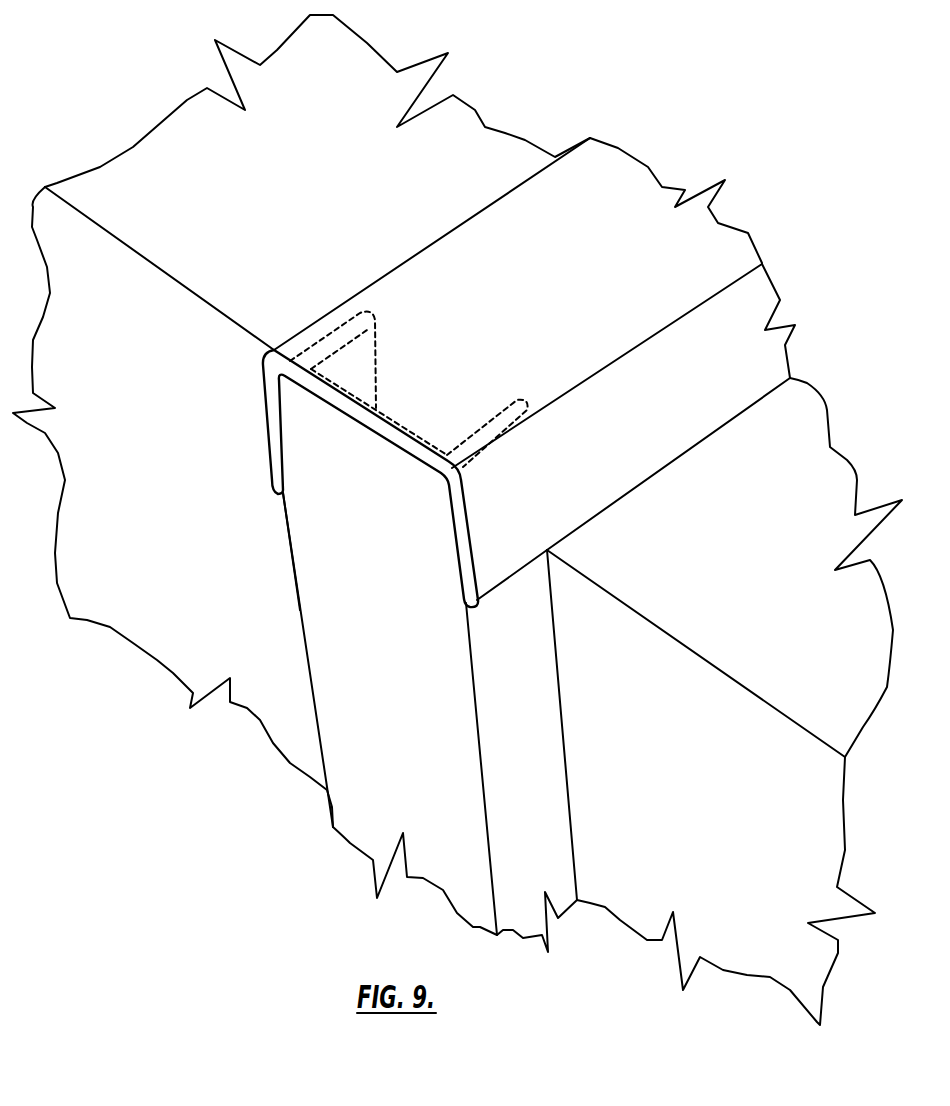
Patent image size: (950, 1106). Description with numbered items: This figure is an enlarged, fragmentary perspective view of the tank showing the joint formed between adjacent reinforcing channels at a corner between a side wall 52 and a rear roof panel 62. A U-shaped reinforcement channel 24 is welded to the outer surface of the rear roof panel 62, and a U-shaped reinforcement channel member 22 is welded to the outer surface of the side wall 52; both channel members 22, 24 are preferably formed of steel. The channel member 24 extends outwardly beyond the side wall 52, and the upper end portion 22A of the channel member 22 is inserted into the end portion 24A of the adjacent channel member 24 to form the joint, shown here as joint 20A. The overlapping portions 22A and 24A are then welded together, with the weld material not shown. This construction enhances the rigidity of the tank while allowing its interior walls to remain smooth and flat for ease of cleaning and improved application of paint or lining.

The edge channel clip 20A is at (252, 433).
The channel member 22 is at (340, 747).
The upper end portion 22A is at (320, 480).
The reinforcement channel 24 is at (438, 275).
The end portion 24A is at (397, 368).
The side wall 52 is at (150, 627).
The rear roof panel 62 is at (210, 137).